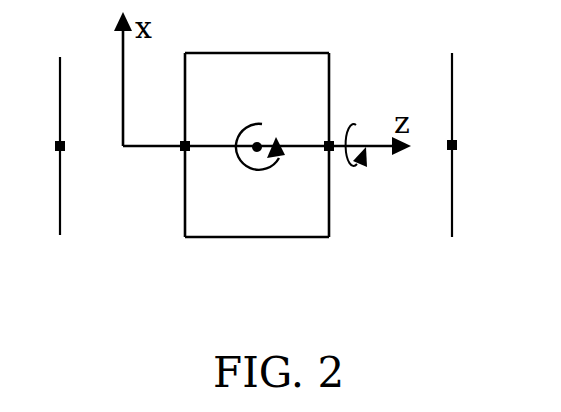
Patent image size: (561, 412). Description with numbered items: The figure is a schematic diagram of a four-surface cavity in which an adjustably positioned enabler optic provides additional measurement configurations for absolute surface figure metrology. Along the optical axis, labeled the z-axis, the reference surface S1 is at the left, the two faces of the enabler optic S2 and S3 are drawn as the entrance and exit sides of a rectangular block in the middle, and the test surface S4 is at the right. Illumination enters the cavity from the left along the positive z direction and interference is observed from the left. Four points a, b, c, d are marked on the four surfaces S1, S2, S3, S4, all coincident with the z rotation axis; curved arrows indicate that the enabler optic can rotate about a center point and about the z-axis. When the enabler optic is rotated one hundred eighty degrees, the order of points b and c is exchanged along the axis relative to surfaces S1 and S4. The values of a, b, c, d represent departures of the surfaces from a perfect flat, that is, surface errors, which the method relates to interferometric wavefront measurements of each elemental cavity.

The first surface S1 is at (59, 120).
The second surface S2 is at (203, 121).
The third surface S3 is at (309, 121).
The fourth surface S4 is at (450, 121).
The point a is at (70, 163).
The point b is at (197, 161).
The point c is at (321, 161).
The point d is at (464, 162).